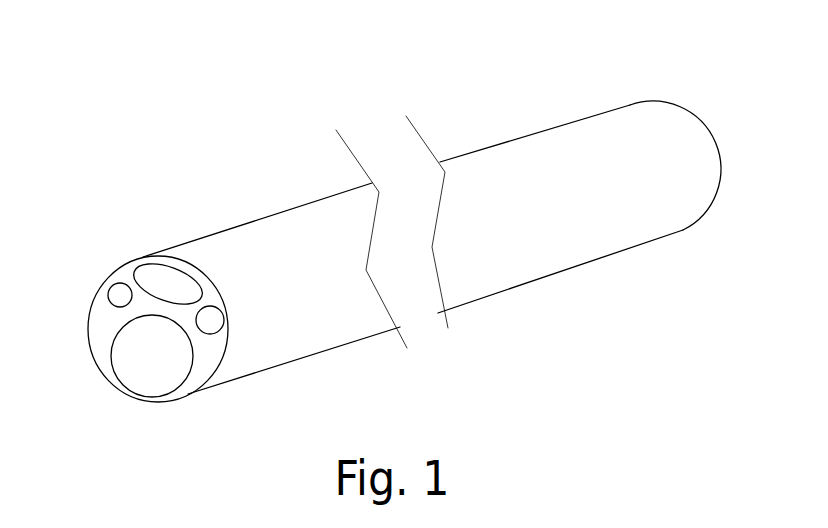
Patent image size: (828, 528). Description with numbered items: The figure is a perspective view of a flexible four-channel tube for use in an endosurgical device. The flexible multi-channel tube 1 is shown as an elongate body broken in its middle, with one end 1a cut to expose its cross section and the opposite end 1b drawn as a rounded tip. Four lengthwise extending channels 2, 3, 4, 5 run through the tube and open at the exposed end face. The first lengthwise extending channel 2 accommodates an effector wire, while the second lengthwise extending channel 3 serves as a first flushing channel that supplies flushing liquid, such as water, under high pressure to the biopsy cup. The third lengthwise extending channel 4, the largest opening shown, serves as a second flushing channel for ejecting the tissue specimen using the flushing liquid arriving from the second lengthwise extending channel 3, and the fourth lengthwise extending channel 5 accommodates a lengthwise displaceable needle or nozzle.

The flexible multi-channel tube 1 is at (205, 162).
The proximal end face 1a is at (202, 247).
The rounded distal tip 1b is at (630, 118).
The first lengthwise extending channel 2 is at (118, 293).
The second lengthwise extending channel 3 is at (160, 276).
The third lengthwise extending channel 4 is at (143, 378).
The fourth lengthwise extending channel 5 is at (212, 322).